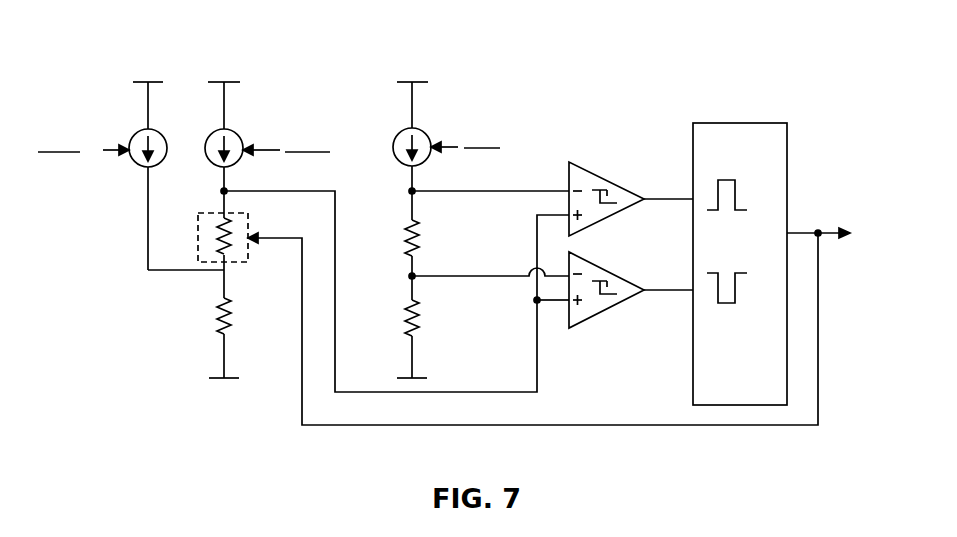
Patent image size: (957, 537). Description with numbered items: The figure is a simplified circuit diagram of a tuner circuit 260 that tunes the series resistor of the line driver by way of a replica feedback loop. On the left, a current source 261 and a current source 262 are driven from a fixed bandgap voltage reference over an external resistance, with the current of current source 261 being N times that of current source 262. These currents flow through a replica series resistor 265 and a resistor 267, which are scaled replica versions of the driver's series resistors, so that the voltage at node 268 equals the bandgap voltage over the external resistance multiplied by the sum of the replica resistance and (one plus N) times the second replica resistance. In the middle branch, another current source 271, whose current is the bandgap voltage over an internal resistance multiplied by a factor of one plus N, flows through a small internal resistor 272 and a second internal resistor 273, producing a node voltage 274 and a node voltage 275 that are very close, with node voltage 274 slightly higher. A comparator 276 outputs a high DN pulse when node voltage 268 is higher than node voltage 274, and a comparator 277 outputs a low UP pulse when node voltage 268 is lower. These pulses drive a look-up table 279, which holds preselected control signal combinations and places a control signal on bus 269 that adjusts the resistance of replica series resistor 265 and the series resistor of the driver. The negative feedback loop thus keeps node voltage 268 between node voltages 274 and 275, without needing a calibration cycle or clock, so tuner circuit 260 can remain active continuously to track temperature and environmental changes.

The tuner circuit 260 is at (131, 53).
The current source 261 is at (127, 125).
The current source 262 is at (245, 122).
The replica series resistor 265 is at (214, 209).
The resistor 267 is at (212, 301).
The node 268 is at (335, 205).
The bus 269 is at (633, 428).
The current source 271 is at (426, 128).
The resistor 272 is at (395, 242).
The resistor 273 is at (400, 311).
The node voltage 274 is at (508, 193).
The node voltage 275 is at (516, 270).
The comparator 276 is at (597, 176).
The comparator 277 is at (616, 309).
The look-up table 279 is at (740, 123).